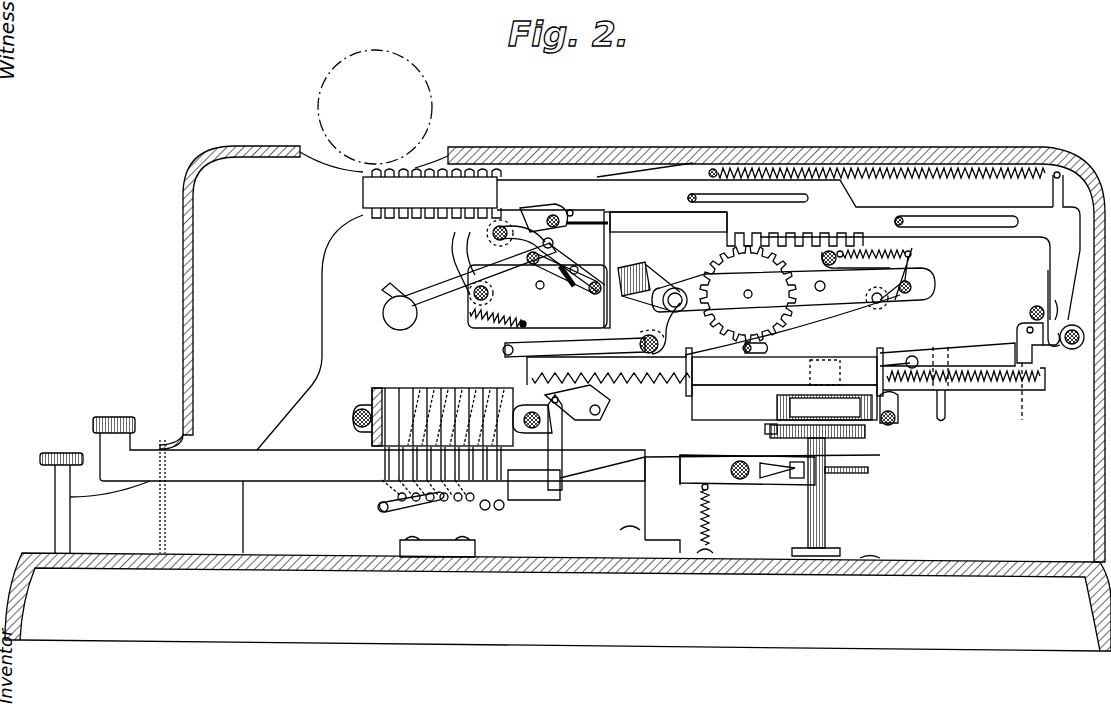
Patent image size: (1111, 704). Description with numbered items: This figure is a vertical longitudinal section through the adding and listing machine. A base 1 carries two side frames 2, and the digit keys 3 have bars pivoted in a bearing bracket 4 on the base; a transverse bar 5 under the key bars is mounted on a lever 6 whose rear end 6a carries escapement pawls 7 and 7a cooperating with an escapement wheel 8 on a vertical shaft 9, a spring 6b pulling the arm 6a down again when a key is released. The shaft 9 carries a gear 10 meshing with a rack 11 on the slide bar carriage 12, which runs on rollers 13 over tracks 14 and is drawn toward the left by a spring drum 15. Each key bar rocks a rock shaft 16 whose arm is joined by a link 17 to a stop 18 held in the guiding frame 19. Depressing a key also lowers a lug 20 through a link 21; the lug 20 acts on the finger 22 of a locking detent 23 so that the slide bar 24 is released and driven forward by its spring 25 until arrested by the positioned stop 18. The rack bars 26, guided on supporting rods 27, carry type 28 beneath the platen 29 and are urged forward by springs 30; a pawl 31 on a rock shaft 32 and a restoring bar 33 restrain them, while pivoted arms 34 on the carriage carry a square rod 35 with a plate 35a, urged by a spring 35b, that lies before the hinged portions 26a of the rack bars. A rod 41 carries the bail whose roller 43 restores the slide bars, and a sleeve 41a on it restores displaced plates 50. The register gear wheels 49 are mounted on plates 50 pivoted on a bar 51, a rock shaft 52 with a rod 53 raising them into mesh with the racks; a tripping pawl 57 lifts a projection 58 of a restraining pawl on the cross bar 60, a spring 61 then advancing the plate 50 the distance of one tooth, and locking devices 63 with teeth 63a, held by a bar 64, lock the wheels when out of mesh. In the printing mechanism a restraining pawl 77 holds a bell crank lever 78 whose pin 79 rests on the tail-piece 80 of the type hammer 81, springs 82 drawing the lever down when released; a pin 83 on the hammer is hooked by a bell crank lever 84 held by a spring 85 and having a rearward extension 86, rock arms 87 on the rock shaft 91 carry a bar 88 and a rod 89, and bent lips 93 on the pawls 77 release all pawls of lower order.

The base 1 is at (880, 560).
The side frames 2 is at (178, 496).
The digit keys 3 is at (369, 449).
The bearing bracket 4 is at (650, 523).
The transversely arranged bar 5 is at (530, 490).
The lever 6 is at (605, 488).
The rear end of lever 6a is at (697, 460).
The spring 6b is at (712, 530).
The escapement pawl 7 is at (755, 462).
The escapement pawl 7a is at (772, 478).
The escapement wheel 8 is at (850, 473).
The vertical shaft 9 is at (808, 512).
The gear 10 is at (858, 438).
The rack 11 is at (763, 430).
The slide bar carriage 12 is at (787, 384).
The rollers 13 is at (898, 412).
The tracks 14 is at (893, 425).
The spring drum 15 is at (824, 407).
The rock shaft 16 is at (440, 495).
The link 17 is at (378, 503).
The stop 18 is at (372, 448).
The guiding frame 19 is at (368, 405).
The lug 20 is at (605, 420).
The link 21 is at (532, 427).
The finger 22 is at (580, 418).
The locking detent 23 is at (590, 378).
The slide bar 24 is at (784, 371).
The spring 25 is at (990, 390).
The rack bars 26 is at (775, 204).
The hinged portions 26a is at (1055, 358).
The supporting rods 27 is at (893, 222).
The type 28 is at (397, 218).
The platen 29 is at (432, 112).
The spring 30 is at (975, 178).
The pawl or lipped plate 31 is at (1062, 350).
The rock shaft 32 is at (1085, 318).
The restoring bar 33 is at (1040, 305).
The pivoted arms 34 is at (958, 343).
The rod 35 is at (1015, 338).
The plate 35a is at (1025, 326).
The spring 35b is at (1042, 397).
The rod 41 is at (641, 325).
The sleeve 41a is at (628, 342).
The roller 43 is at (500, 352).
The register gear wheels 49 is at (720, 268).
The plate or bar 50 is at (793, 290).
The bar 51 is at (920, 265).
The rock shaft 52 is at (649, 281).
The rod 53 is at (680, 272).
The tripping pawl 57 is at (836, 291).
The projection 58 is at (885, 305).
The cross bar 60 is at (842, 257).
The spring 61 is at (874, 244).
The locking devices 63 is at (848, 333).
The tooth 63a is at (735, 342).
The bar 64 is at (704, 372).
The selecting and restraining pawl 77 is at (548, 204).
The bell crank lever 78 is at (612, 250).
The pin 79 is at (552, 258).
The tail-piece 80 is at (501, 249).
The type hammer 81 is at (469, 286).
The springs 82 is at (574, 291).
The pin or projection 83 is at (470, 275).
The bell crank lever 84 is at (453, 248).
The spring 85 is at (470, 326).
The rearward extension 86 is at (537, 296).
The rock arm 87 is at (558, 285).
The bar 88 is at (557, 273).
The rod 89 is at (551, 304).
The rock shaft 91 is at (595, 304).
The bent lips 93 is at (610, 222).